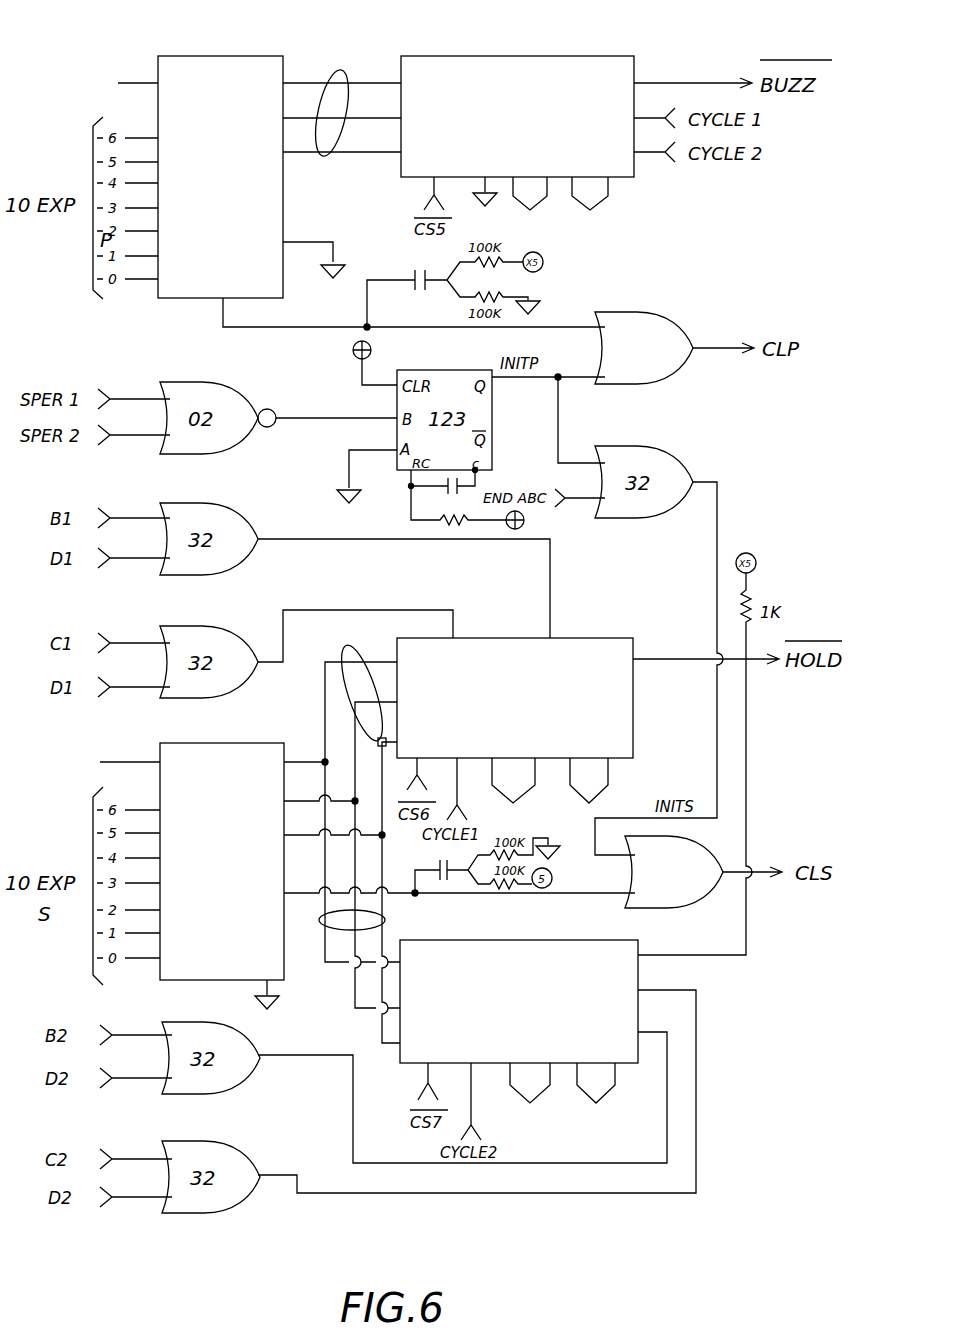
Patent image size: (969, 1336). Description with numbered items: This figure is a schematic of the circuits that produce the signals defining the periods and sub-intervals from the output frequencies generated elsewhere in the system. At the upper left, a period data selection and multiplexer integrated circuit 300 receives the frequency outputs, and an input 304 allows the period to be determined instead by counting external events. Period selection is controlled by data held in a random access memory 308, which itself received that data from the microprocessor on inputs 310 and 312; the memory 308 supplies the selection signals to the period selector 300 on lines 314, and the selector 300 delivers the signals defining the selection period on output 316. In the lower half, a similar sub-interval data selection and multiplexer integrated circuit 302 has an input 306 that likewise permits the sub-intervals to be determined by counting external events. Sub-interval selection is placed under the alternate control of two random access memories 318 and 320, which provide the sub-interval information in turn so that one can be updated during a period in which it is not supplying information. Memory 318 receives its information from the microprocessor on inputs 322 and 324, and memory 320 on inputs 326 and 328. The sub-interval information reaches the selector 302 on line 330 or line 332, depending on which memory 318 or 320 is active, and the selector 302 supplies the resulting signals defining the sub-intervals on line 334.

The period data selection and multiplexer integrated circuit 300 is at (220, 152).
The sub-interval data selection and multiplexer integrated circuit 302 is at (222, 844).
The input 304 is at (106, 63).
The input 306 is at (100, 745).
The random access memory 308 is at (517, 91).
The input 310 is at (564, 219).
The input 312 is at (626, 206).
The lines 314 is at (342, 83).
The output 316 is at (653, 330).
The random access memory 318 is at (525, 682).
The random access memory 320 is at (519, 984).
The input 322 is at (535, 792).
The input 324 is at (619, 778).
The input 326 is at (514, 1098).
The input 328 is at (621, 1098).
The line 330 is at (361, 830).
The line 332 is at (383, 918).
The line 334 is at (672, 872).